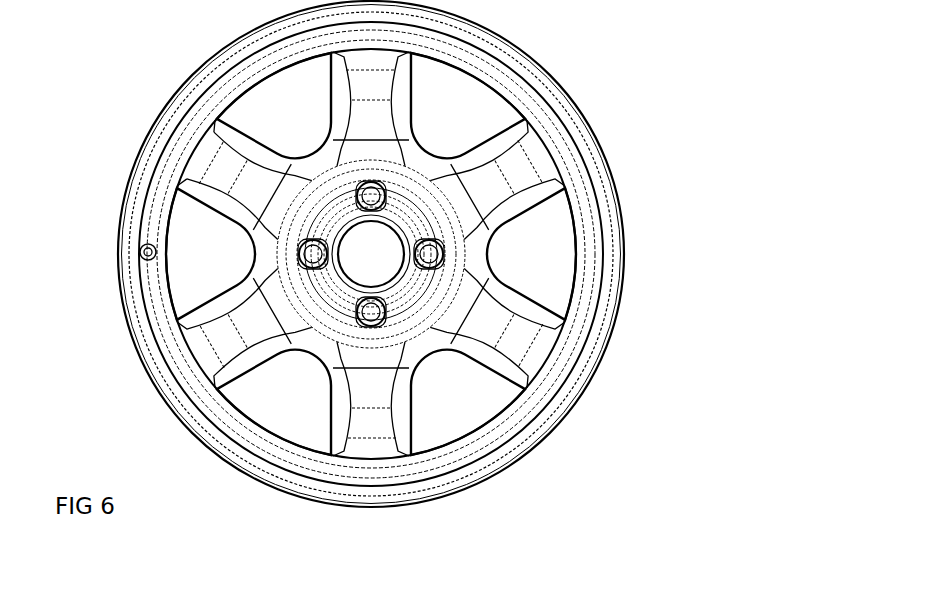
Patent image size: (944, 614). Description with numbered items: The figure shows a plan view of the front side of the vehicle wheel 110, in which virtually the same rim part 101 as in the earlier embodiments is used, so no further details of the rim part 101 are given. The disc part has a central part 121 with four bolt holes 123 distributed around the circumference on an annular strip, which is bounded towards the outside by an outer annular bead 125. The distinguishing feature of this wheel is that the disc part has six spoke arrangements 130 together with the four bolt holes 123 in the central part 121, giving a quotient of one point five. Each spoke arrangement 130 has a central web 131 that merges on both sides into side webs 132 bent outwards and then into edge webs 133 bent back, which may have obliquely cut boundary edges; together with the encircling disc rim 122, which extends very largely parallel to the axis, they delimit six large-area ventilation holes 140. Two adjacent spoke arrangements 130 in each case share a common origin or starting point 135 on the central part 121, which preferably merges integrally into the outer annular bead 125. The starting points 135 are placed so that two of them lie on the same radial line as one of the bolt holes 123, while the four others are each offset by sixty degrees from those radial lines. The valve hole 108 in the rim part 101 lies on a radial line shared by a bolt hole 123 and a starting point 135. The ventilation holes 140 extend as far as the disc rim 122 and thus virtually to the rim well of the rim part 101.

The rim part 101 is at (577, 107).
The valve hole 108 is at (141, 251).
The vehicle wheel 110 is at (644, 221).
The central part 121 is at (414, 179).
The disc rim 122 is at (167, 290).
The bolt hole 123 is at (437, 257).
The outer annular bead 125 is at (432, 292).
The spoke arrangement 130 is at (194, 214).
The central web 131 is at (247, 183).
The side web 132 is at (237, 153).
The edge web 133 is at (245, 143).
The starting point 135 is at (322, 167).
The ventilation hole 140 is at (302, 409).